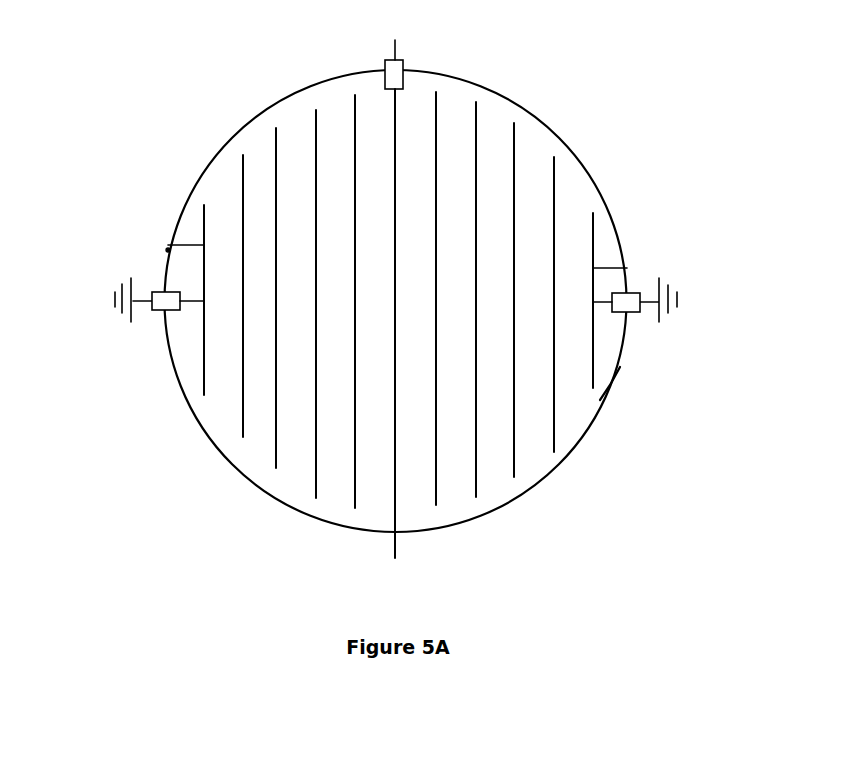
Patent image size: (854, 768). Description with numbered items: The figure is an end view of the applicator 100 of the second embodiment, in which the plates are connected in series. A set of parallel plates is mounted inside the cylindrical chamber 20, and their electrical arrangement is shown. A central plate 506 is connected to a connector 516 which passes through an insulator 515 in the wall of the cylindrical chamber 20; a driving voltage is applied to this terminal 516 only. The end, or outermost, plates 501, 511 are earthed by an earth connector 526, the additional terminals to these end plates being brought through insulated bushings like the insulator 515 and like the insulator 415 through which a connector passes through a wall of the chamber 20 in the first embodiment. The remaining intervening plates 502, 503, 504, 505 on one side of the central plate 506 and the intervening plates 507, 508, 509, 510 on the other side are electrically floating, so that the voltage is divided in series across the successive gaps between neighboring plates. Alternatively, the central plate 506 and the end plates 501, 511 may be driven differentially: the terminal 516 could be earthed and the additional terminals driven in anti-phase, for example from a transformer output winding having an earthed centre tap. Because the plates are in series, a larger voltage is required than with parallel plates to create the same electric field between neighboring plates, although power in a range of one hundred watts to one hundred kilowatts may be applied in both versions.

The antenna system 100 is at (667, 99).
The chamber 20 is at (620, 367).
The insulator 415 is at (192, 192).
The end plate 501 is at (168, 250).
The intervening plate 502 is at (243, 422).
The intervening plate 503 is at (276, 157).
The intervening plate 504 is at (316, 475).
The intervening plate 505 is at (355, 122).
The central plate 506 is at (395, 118).
The intervening plate 507 is at (436, 495).
The intervening plate 508 is at (477, 135).
The intervening plate 509 is at (514, 473).
The intervening plate 510 is at (554, 412).
The end plate 511 is at (604, 268).
The insulator 515 is at (385, 62).
The connector 516 is at (395, 50).
The earth connector 526 is at (131, 320).